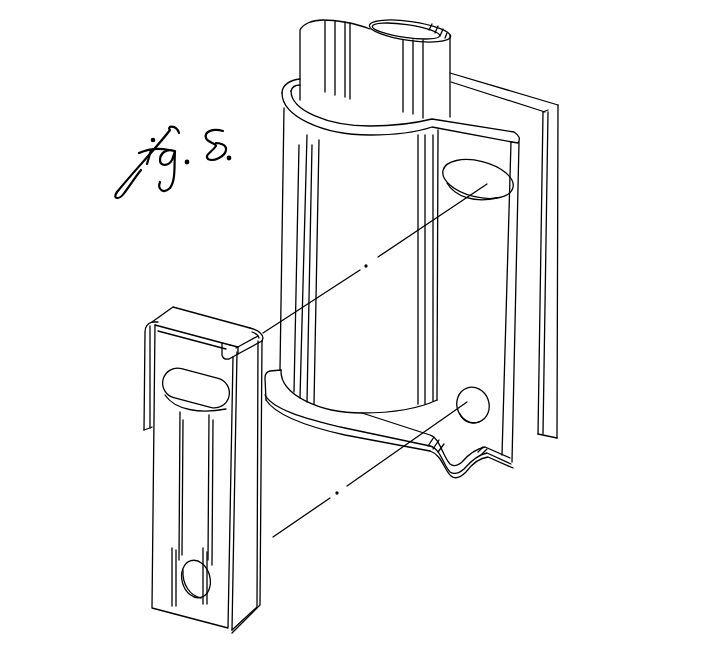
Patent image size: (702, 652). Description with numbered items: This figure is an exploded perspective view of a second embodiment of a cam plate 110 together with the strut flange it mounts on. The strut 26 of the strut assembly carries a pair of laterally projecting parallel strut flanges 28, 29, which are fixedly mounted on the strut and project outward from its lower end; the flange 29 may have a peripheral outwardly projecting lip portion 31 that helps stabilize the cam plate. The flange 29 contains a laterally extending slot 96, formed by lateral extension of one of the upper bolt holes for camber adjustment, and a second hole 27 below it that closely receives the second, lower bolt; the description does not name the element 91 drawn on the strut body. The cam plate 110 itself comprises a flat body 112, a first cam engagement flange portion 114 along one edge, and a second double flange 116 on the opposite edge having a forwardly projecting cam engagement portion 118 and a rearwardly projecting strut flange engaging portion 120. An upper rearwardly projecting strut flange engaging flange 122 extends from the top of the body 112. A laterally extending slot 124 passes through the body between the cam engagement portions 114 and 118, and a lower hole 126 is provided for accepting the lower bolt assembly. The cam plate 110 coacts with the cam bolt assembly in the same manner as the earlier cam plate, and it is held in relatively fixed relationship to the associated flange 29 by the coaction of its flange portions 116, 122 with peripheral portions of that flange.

The strut 26 is at (305, 50).
The second hole 27 is at (480, 388).
The strut flange 28 is at (537, 231).
The strut flange 29 is at (487, 320).
The lip portion 31 is at (453, 472).
The housing body 91 is at (427, 174).
The slot 96 is at (482, 175).
The cam plate 110 is at (146, 462).
The flat body 112 is at (167, 532).
The first cam engagement flange portion 114 is at (144, 368).
The second double flange 116 is at (245, 484).
The cam engagement portion 118 is at (221, 343).
The strut flange engaging portion 120 is at (271, 329).
The strut flange engaging flange 122 is at (180, 317).
The slot 124 is at (173, 386).
The lower hole 126 is at (199, 590).